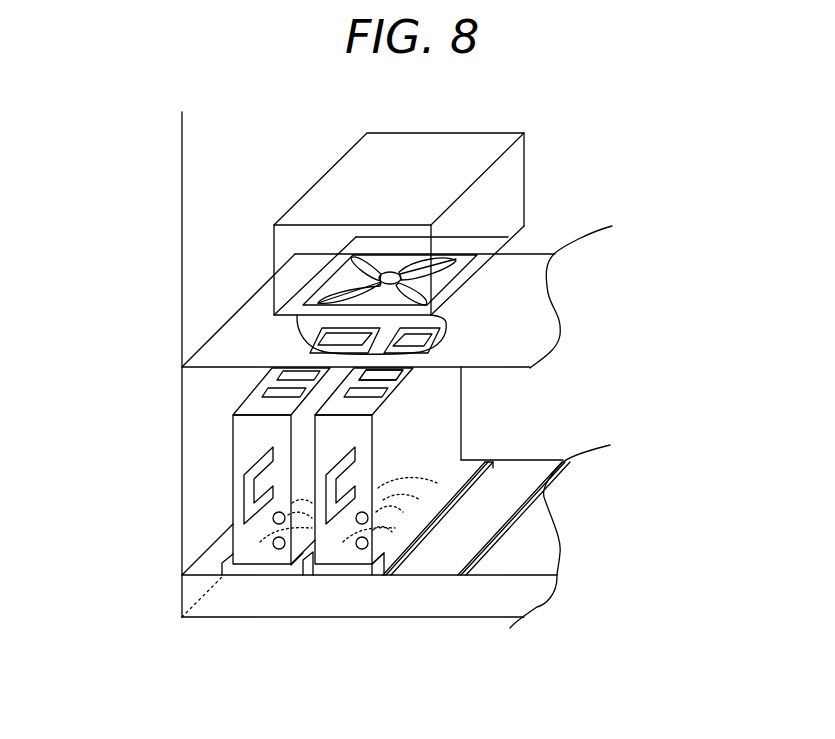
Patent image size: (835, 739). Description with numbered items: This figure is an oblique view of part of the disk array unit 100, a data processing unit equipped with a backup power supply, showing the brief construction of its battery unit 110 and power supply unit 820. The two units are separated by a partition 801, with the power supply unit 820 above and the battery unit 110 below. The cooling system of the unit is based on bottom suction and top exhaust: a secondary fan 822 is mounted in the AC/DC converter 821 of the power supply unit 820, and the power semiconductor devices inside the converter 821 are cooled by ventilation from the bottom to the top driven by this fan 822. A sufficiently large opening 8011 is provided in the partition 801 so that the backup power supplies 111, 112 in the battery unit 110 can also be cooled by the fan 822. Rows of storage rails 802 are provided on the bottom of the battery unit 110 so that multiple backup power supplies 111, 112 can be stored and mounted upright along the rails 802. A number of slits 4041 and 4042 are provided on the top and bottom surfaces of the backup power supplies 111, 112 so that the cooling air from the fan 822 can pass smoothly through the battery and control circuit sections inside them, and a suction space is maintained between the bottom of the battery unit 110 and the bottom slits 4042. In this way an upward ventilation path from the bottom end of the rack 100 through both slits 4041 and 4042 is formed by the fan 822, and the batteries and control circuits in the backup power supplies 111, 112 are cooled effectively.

The disk array unit 100 is at (590, 308).
The partition 801 is at (210, 368).
The power supply unit 820 is at (370, 238).
The AC/DC converter 821 is at (317, 200).
The secondary fan 822 is at (487, 235).
The opening 8011 is at (440, 328).
The battery unit 110 is at (322, 551).
The backup power supply 111 is at (253, 564).
The backup power supply 112 is at (335, 564).
The slits 4041 is at (382, 393).
The bottom slits 4042 is at (413, 505).
The storage rails 802 is at (458, 576).